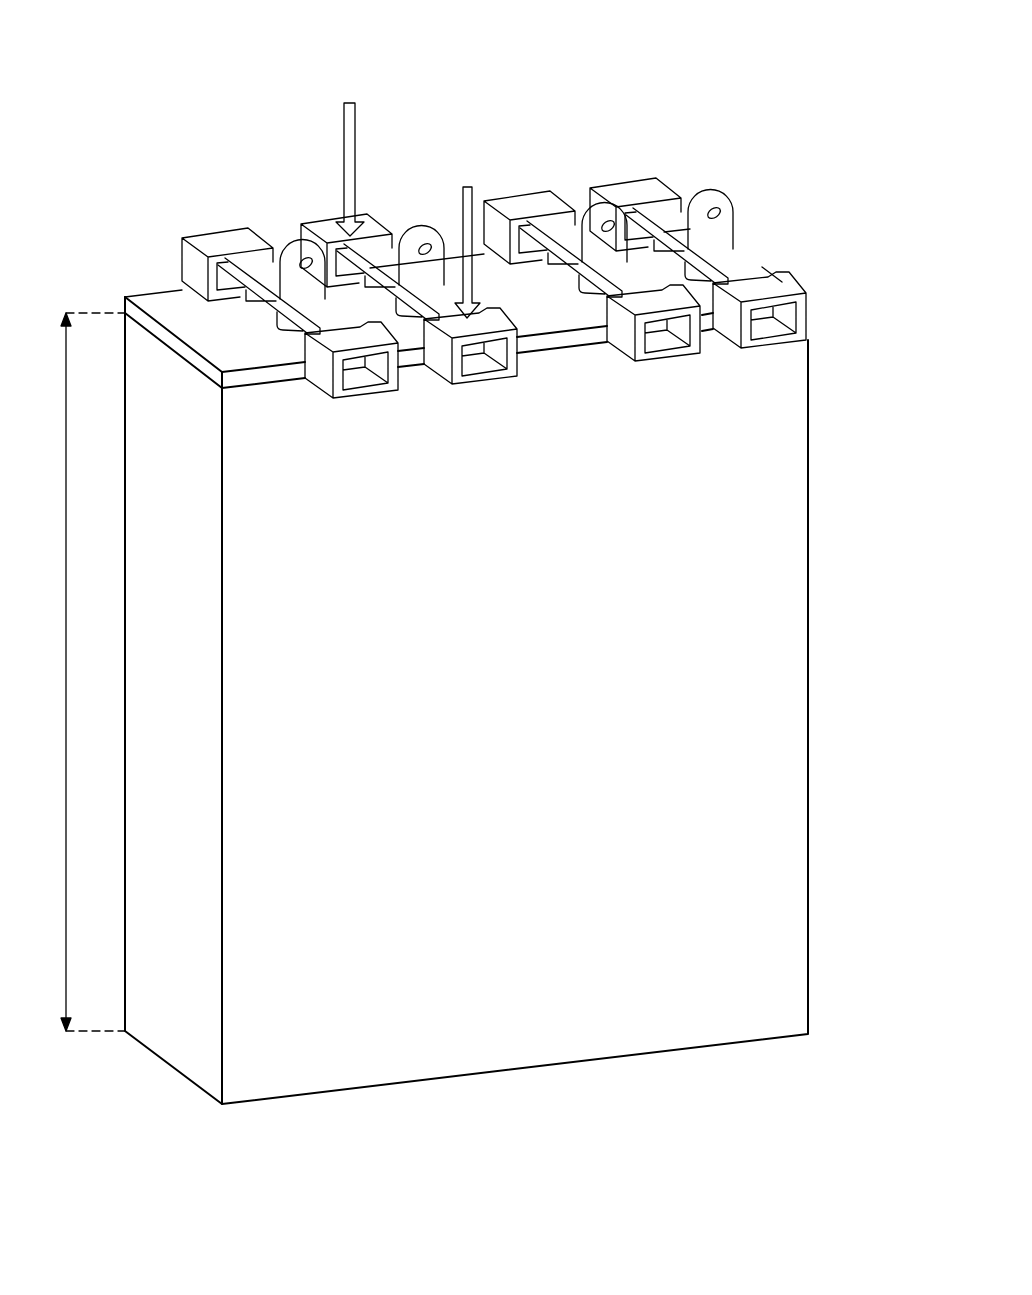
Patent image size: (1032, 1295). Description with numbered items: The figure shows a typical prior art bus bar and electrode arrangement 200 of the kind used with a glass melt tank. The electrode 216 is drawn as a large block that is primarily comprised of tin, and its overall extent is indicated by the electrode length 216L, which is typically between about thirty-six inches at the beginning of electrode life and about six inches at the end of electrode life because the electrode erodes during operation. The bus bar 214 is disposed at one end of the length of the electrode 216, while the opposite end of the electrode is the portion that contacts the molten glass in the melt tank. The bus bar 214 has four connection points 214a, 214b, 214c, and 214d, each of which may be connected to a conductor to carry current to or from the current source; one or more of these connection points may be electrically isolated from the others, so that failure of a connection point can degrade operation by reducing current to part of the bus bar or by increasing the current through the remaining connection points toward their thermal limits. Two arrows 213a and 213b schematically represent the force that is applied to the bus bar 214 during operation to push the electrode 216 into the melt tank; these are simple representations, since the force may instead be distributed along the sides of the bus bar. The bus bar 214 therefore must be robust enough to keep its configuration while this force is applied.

The bus bar and electrode arrangement 200 is at (117, 42).
The arrow 213a is at (353, 107).
The arrow 213b is at (468, 183).
The bus bar 214 is at (850, 178).
The connection point 214a is at (292, 236).
The connection point 214b is at (418, 219).
The connection point 214c is at (587, 212).
The connection point 214d is at (703, 188).
The electrode 216 is at (850, 340).
The electrode length 216L is at (80, 672).